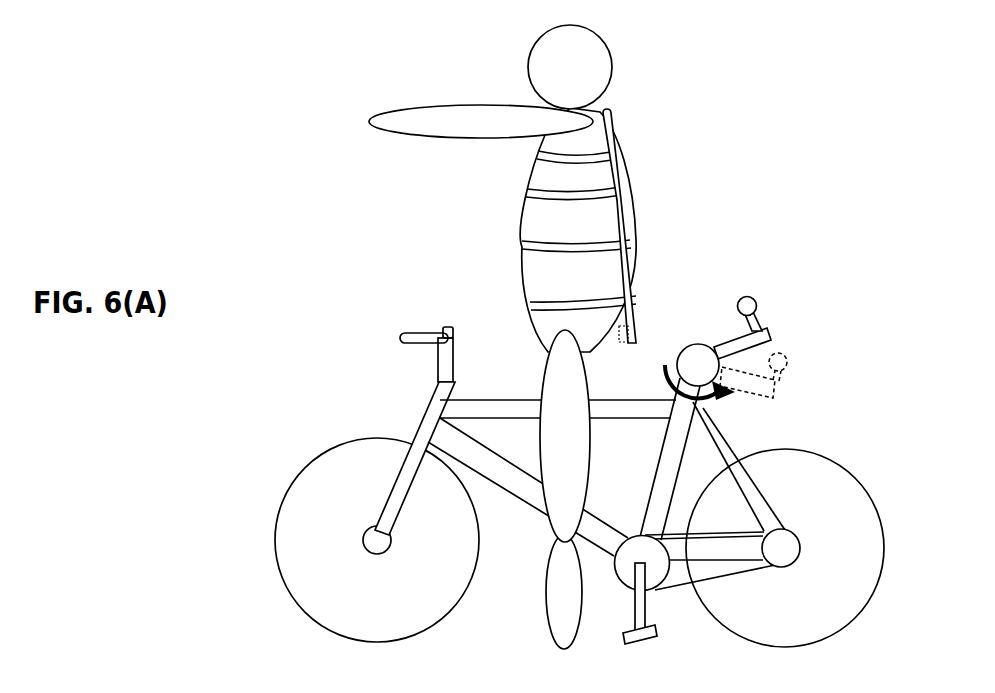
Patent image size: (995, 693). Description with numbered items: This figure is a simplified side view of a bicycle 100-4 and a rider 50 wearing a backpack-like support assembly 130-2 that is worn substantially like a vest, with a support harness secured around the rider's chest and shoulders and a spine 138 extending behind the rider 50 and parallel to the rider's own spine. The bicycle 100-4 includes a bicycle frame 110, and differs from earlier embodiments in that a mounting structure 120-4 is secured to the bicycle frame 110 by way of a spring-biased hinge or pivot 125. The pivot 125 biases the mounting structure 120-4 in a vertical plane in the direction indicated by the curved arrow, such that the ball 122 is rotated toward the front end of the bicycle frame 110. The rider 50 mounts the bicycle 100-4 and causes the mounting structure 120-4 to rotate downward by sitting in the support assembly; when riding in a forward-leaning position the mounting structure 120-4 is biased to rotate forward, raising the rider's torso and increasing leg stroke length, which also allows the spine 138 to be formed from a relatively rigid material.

The rider 50 is at (569, 337).
The bicycle 100-4 is at (545, 487).
The bicycle frame 110 is at (497, 392).
The mounting structure 120-4 is at (781, 335).
The ball 122 is at (749, 303).
The spring-biased hinge or pivot 125 is at (691, 358).
The backpack-like rider support assembly 130-2 is at (670, 190).
The spine 138 is at (634, 165).